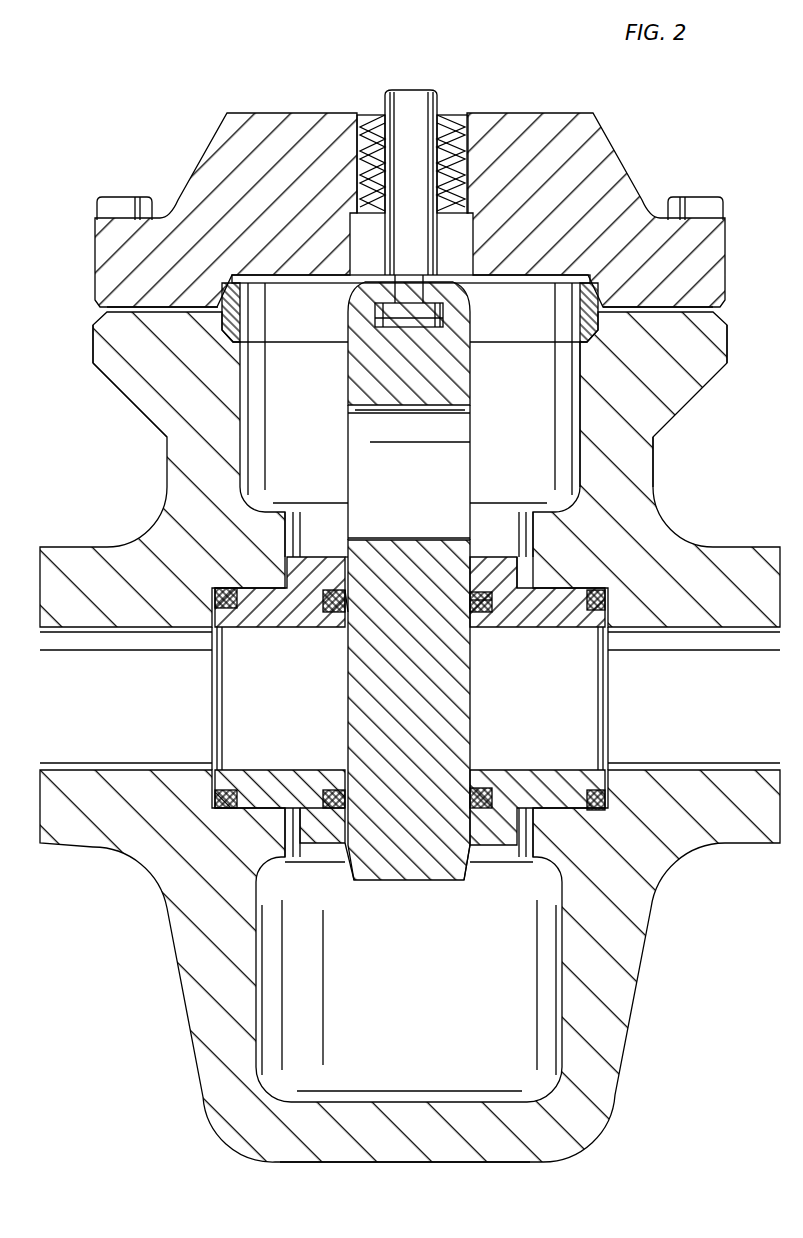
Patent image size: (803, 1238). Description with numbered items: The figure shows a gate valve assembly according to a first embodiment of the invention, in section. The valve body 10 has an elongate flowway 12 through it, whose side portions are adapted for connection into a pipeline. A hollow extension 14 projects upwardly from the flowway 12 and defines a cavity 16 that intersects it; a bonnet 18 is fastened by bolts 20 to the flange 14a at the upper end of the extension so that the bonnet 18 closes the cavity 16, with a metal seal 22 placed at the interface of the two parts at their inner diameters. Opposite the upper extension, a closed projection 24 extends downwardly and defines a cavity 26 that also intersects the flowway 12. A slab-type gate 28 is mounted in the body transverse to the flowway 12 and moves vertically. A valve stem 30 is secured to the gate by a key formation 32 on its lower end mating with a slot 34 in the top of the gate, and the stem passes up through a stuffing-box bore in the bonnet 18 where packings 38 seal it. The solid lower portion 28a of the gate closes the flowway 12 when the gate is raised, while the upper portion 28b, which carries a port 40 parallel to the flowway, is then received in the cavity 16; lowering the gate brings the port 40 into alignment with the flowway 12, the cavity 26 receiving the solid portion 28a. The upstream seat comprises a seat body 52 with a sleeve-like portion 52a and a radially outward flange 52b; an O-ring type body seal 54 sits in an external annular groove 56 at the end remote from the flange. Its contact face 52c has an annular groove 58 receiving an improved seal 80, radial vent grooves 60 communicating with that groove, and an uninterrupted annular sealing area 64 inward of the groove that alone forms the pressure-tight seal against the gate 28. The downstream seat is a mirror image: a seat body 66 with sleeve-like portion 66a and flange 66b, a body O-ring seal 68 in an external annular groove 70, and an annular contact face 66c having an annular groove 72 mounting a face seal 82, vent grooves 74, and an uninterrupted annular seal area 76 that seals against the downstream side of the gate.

The valve body 10 is at (95, 835).
The flowway 12 is at (82, 770).
The hollow extension 14 is at (642, 482).
The flange 14a is at (100, 338).
The cavity 16 is at (585, 385).
The bonnet 18 is at (597, 153).
The bolts 20 is at (122, 205).
The metal seal 22 is at (242, 318).
The closed projection 24 is at (455, 1164).
The cavity 26 is at (420, 1100).
The slab-type gate 28 is at (427, 629).
The solid portion 28a is at (455, 712).
The upper portion 28b is at (472, 378).
The valve stem 30 is at (422, 120).
The key formation 32 is at (443, 312).
The slot 34 is at (385, 318).
The packings 38 is at (368, 118).
The port 40 is at (365, 410).
The seat body 52 is at (238, 632).
The sleeve-like portion 52a is at (243, 778).
The flange 52b is at (300, 863).
The contact face 52c is at (356, 885).
The O-ring type body seal 54 is at (215, 590).
The external annular groove 56 is at (243, 590).
The annular groove 58 is at (330, 603).
The vent grooves 60 is at (358, 548).
The annular sealing area 64 is at (397, 550).
The seat body 66 is at (563, 632).
The sleeve-like portion 66a is at (572, 802).
The flange 66b is at (517, 562).
The annular contact face 66c is at (456, 885).
The body O-ring seal 68 is at (607, 595).
The external annular groove 70 is at (592, 592).
The annular groove 72 is at (595, 792).
The vent grooves 74 is at (480, 560).
The annular seal area 76 is at (470, 765).
The seal 80 is at (330, 792).
The face seal 82 is at (483, 612).